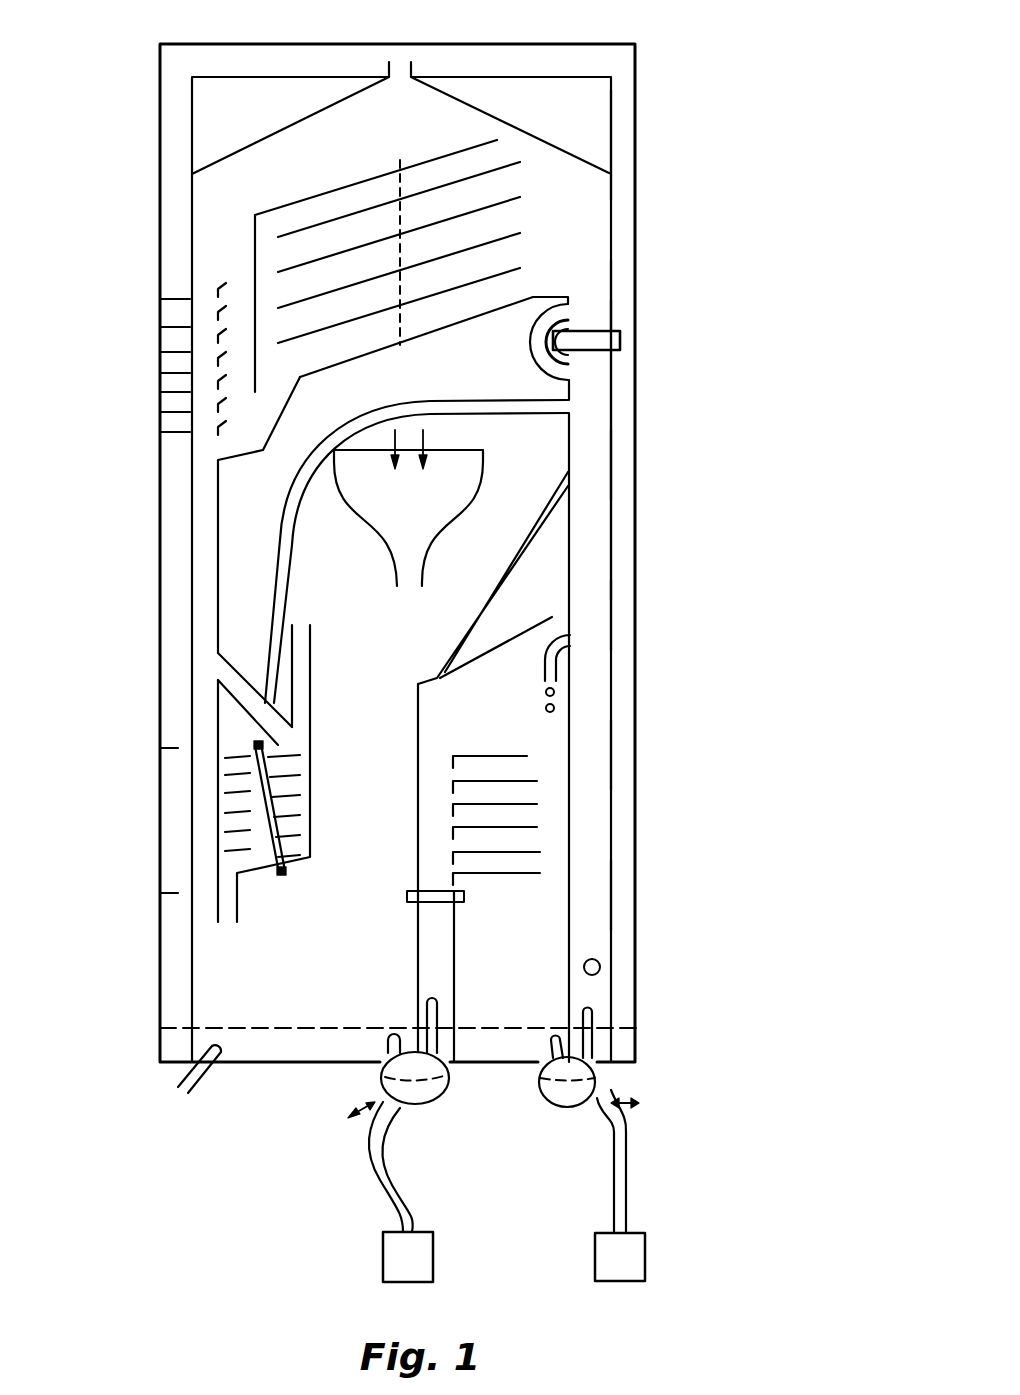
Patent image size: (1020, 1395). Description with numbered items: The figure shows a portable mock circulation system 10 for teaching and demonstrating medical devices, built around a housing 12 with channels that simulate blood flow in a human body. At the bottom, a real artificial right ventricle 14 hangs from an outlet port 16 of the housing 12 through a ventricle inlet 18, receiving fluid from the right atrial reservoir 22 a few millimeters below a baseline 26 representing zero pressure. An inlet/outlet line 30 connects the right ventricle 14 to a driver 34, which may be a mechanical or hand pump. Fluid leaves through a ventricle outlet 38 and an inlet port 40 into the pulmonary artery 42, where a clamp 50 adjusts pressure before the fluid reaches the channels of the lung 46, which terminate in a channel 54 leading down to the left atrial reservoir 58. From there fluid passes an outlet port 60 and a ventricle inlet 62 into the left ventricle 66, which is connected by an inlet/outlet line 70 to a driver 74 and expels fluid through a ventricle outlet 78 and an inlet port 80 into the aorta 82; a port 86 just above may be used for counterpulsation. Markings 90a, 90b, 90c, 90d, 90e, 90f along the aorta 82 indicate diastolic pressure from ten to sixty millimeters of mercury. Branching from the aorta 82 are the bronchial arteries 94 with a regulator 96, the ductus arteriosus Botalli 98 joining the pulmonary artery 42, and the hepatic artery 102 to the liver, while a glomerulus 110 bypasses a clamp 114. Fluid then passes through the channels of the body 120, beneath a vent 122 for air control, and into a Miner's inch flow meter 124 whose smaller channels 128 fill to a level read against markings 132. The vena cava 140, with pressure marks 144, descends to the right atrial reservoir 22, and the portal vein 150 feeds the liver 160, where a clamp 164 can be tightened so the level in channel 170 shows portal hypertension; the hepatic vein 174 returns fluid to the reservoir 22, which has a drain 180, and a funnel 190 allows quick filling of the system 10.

The mock circulation system 10 is at (716, 591).
The housing 12 is at (593, 993).
The right ventricle 14 is at (425, 1098).
The outlet port 16 is at (388, 1050).
The ventricle inlet 18 is at (380, 1108).
The right atrial reservoir 22 is at (260, 1002).
The baseline 26 is at (162, 1032).
The inlet/outlet line 30 is at (372, 1165).
The driver 34 is at (396, 1272).
The ventricle outlet 38 is at (447, 1085).
The inlet port 40 is at (440, 1003).
The pulmonary artery 42 is at (420, 957).
The lung 46 is at (528, 814).
The clamp 50 is at (464, 896).
The channel 54 is at (555, 862).
The left atrial reservoir 58 is at (493, 1002).
The outlet port 60 is at (550, 1042).
The ventricle inlet 62 is at (575, 1107).
The left ventricle 66 is at (583, 1090).
The inlet/outlet line 70 is at (628, 1122).
The driver 74 is at (608, 1272).
The ventricle outlet 78 is at (620, 1077).
The inlet port 80 is at (603, 1058).
The aorta 82 is at (612, 428).
The port 86 is at (600, 967).
The marking 90a is at (623, 880).
The marking 90b is at (623, 742).
The marking 90c is at (623, 605).
The marking 90d is at (623, 455).
The marking 90e is at (621, 314).
The marking 90f is at (623, 172).
The bronchial arteries 94 is at (560, 652).
The regulator 96 is at (556, 690).
The ductus arteriosus Botalli 98 is at (553, 511).
The hepatic artery 102 is at (570, 396).
The glomerulus 110 is at (565, 372).
The clamp 114 is at (621, 342).
The body 120 is at (493, 219).
The vent 122 is at (400, 62).
The flow meter 124 is at (243, 412).
The channels 128 is at (215, 373).
The markings 132 is at (178, 320).
The vena cava 140 is at (202, 495).
The marks 144 is at (178, 747).
The portal vein 150 is at (228, 681).
The liver 160 is at (247, 803).
The clamp 164 is at (260, 836).
The channel 170 is at (300, 714).
The hepatic vein 174 is at (227, 912).
The drain 180 is at (200, 1078).
The funnel 190 is at (392, 517).